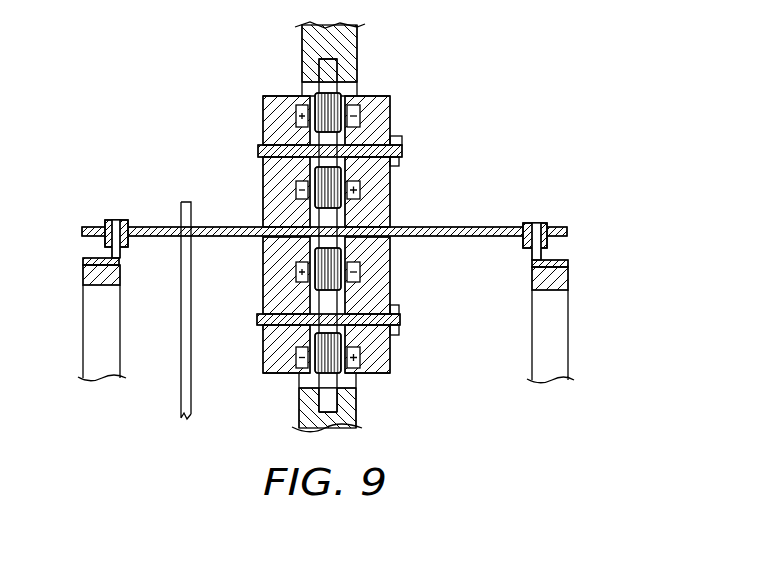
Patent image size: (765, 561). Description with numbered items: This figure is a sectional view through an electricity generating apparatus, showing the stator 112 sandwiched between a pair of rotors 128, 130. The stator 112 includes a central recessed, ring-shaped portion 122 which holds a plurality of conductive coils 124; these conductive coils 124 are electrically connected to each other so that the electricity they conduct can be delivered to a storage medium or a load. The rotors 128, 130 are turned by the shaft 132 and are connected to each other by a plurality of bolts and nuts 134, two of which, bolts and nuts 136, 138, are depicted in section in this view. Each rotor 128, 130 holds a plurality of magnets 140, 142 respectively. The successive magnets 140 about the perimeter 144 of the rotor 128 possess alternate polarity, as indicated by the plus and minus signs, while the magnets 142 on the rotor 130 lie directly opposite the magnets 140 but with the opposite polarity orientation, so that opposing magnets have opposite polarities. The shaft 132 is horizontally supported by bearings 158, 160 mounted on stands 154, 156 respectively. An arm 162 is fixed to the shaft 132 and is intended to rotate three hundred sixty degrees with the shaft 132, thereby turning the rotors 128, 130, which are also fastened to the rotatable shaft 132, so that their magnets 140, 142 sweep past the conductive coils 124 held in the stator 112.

The stator 112 is at (350, 60).
The central recessed, ring-shaped portion 122 is at (393, 102).
The conductive coils 124 is at (260, 180).
The rotor 128 is at (264, 101).
The rotor 130 is at (392, 210).
The shaft 132 is at (446, 238).
The bolts and nuts 134 is at (411, 328).
The bolt and nut 136 is at (401, 139).
The bolt and nut 138 is at (259, 318).
The magnets 140 is at (287, 387).
The magnets 142 is at (369, 387).
The perimeter 144 is at (277, 96).
The stand 154 is at (93, 303).
The stand 156 is at (547, 322).
The bearing 158 is at (105, 221).
The bearing 160 is at (547, 225).
The arm 162 is at (182, 400).